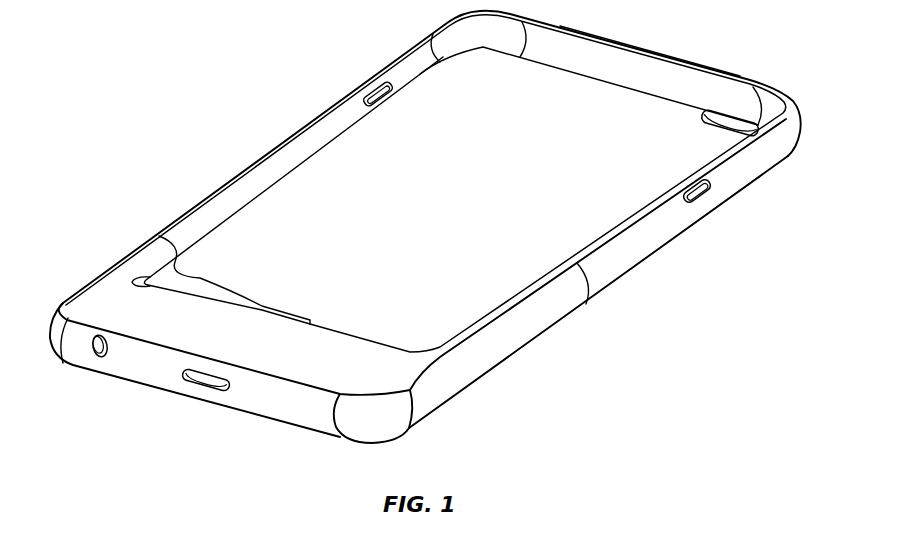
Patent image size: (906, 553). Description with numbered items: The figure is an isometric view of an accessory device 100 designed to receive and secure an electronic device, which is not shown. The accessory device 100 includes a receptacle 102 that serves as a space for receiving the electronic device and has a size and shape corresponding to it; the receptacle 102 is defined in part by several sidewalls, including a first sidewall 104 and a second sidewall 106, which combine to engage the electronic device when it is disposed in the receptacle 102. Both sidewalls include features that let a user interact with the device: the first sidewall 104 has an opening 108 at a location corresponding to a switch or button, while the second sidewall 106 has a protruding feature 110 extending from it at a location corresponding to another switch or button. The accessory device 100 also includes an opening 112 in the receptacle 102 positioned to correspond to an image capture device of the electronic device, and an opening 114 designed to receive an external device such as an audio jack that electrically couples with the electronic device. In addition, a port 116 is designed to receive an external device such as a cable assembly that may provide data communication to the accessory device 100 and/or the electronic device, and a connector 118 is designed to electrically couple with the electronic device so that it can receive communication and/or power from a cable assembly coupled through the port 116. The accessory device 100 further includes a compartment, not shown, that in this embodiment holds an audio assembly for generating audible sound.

The accessory device 100 is at (425, 237).
The receptacle 102 is at (664, 71).
The first sidewall 104 is at (276, 173).
The second sidewall 106 is at (610, 292).
The opening 108 is at (368, 72).
The protruding feature 110 is at (703, 193).
The opening 112 is at (717, 110).
The opening 114 is at (95, 359).
The port 116 is at (238, 392).
The connector 118 is at (143, 266).